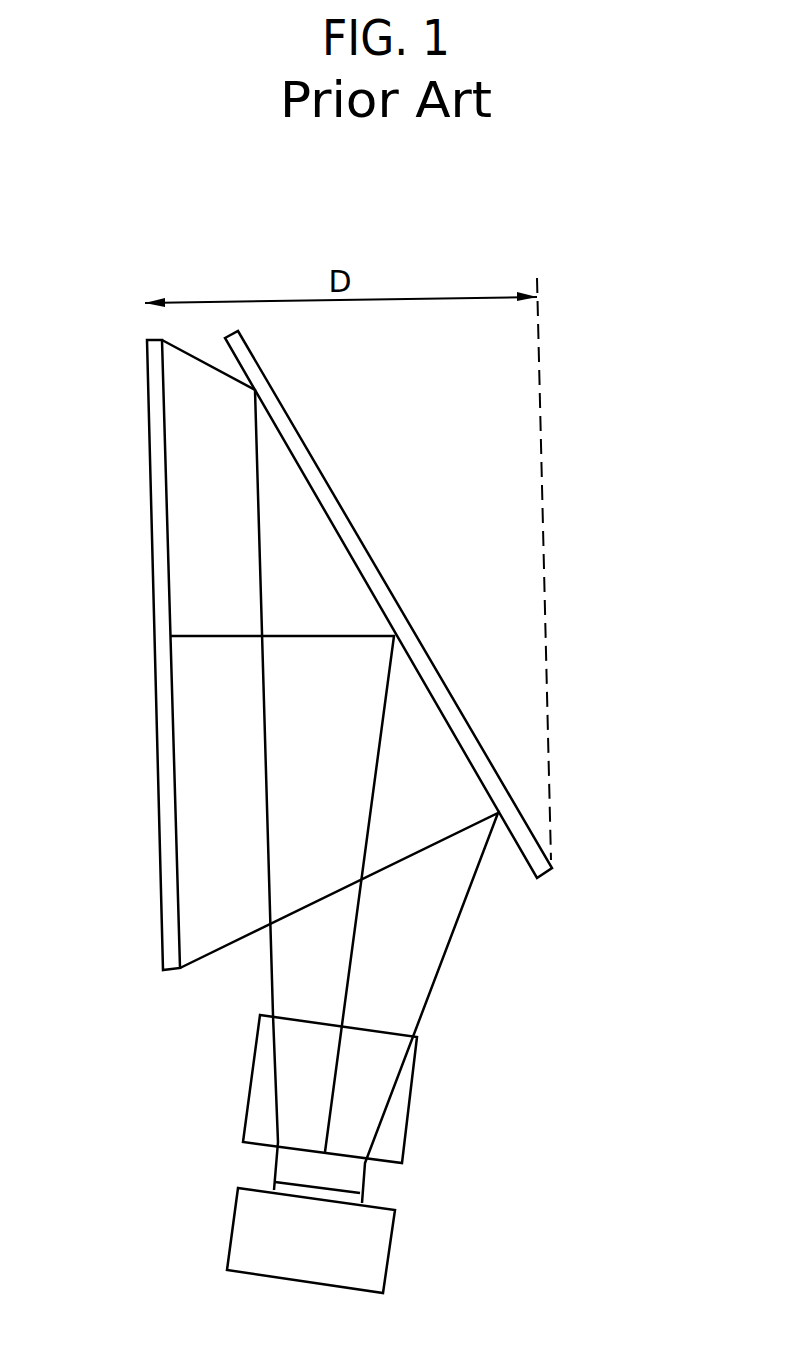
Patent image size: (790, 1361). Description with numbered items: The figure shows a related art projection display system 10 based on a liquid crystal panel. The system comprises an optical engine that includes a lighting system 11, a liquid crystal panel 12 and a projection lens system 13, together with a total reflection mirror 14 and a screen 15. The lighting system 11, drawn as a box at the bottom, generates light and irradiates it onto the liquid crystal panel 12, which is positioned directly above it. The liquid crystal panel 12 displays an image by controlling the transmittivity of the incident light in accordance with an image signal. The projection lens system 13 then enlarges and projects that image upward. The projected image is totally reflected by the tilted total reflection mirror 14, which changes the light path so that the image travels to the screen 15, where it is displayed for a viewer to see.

The projection display system 10 is at (512, 1150).
The optical engine 11 is at (380, 1252).
The liquid crystal panel 12 is at (355, 1198).
The projection lens system 13 is at (408, 1073).
The total reflection mirror 14 is at (318, 477).
The screen 15 is at (157, 521).